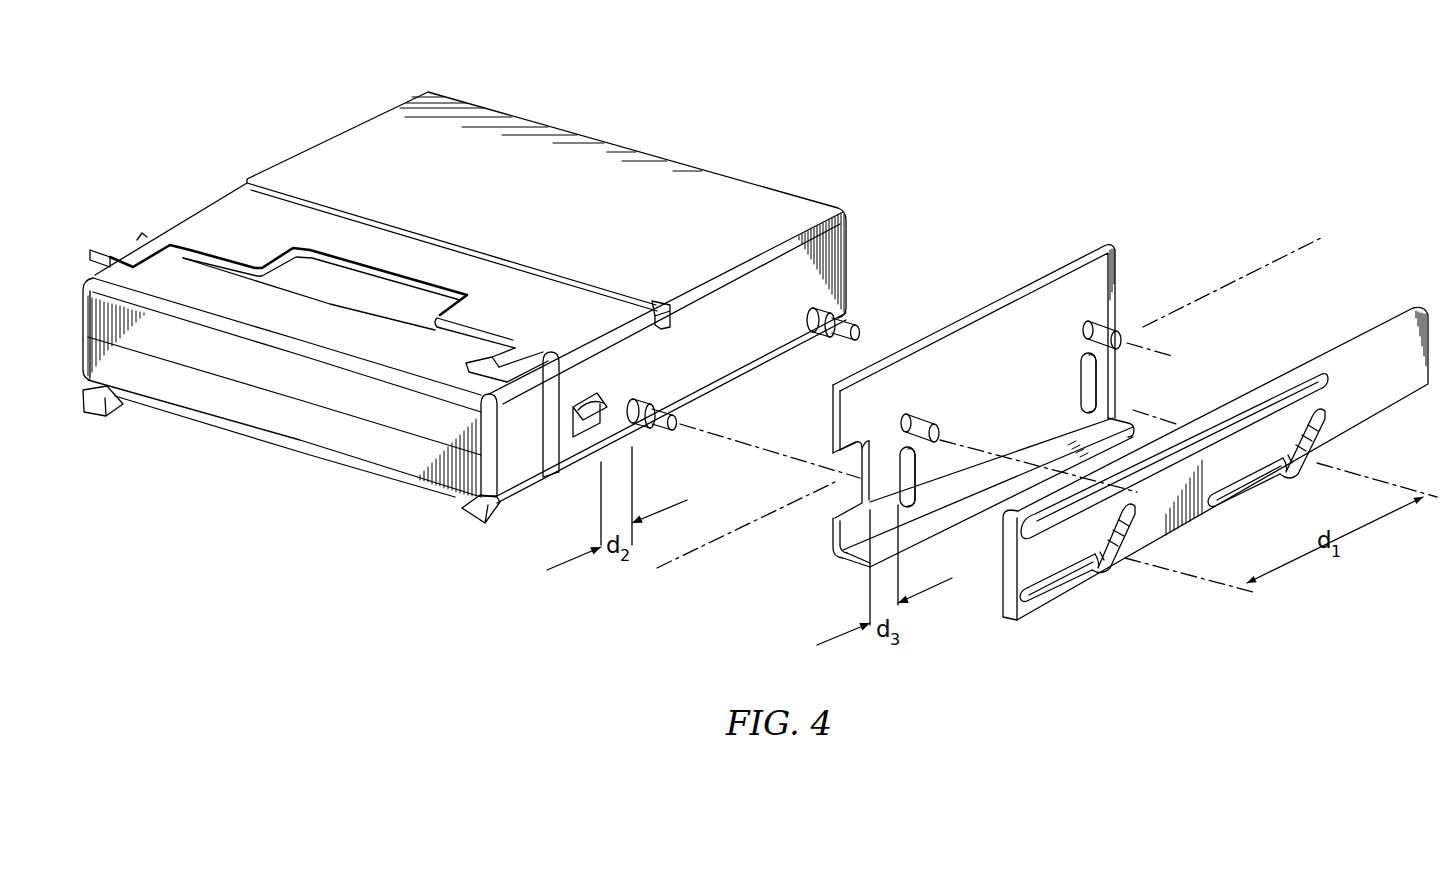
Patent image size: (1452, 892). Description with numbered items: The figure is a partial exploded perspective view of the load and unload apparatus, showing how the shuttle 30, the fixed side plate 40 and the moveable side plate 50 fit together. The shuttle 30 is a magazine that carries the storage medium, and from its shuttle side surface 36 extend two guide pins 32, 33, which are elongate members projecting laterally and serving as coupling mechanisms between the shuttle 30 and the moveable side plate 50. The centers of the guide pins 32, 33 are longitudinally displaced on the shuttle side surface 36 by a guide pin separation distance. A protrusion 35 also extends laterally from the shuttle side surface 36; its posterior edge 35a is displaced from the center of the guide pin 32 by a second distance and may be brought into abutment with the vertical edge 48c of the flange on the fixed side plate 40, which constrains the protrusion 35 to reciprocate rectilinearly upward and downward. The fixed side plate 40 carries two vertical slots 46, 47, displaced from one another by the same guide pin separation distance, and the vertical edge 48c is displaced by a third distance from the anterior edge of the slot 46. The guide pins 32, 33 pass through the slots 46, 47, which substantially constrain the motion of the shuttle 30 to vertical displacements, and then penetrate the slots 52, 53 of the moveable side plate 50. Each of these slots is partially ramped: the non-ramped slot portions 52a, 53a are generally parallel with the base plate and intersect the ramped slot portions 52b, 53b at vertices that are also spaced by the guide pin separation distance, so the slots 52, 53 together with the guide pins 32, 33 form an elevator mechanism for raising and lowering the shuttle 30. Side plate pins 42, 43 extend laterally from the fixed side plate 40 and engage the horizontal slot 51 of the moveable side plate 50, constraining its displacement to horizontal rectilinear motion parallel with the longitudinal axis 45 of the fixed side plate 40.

The shuttle 30 is at (338, 149).
The guide pin 32 is at (652, 431).
The guide pin 33 is at (848, 323).
The protrusion 35 is at (593, 395).
The posterior edge 35a is at (604, 398).
The shuttle side surface 36 is at (706, 312).
The fixed side plate 40 is at (968, 340).
The side plate pin 42 is at (918, 415).
The side plate pin 43 is at (1110, 330).
The longitudinal axis 45 is at (1263, 271).
The slot 46 is at (915, 480).
The slot 47 is at (1095, 390).
The vertical edge 48c is at (847, 470).
The moveable side plate 50 is at (1358, 366).
The horizontal slot 51 is at (1240, 432).
The slot 52 is at (1047, 606).
The non-ramped slot portion 52a is at (1080, 571).
The ramped slot portion 52b is at (1125, 530).
The slot 53 is at (1232, 478).
The non-ramped slot portion 53a is at (1278, 478).
The ramped slot portion 53b is at (1322, 440).